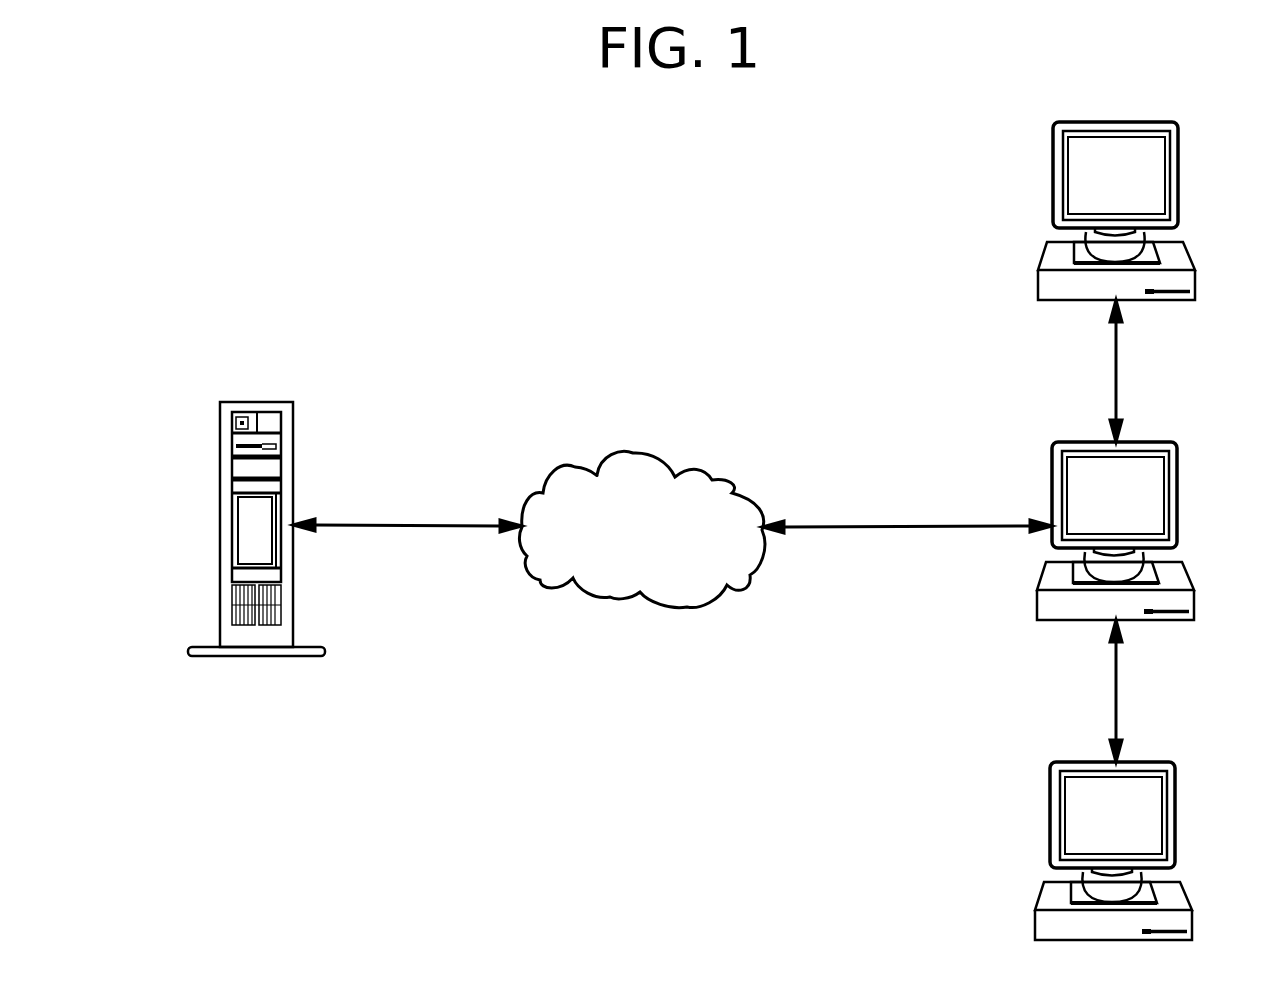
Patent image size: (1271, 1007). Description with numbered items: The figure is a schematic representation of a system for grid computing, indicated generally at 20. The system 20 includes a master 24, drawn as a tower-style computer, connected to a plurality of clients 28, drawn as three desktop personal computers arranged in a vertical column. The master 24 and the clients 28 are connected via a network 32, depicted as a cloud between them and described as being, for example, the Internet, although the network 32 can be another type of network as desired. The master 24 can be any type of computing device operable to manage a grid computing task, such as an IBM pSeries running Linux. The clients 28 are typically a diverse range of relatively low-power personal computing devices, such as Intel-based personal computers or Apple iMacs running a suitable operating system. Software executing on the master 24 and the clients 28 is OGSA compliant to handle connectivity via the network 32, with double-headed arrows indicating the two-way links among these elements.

The system for grid computing 20 is at (372, 237).
The master 24 is at (258, 400).
The clients 28 is at (1180, 150).
The network 32 is at (657, 547).